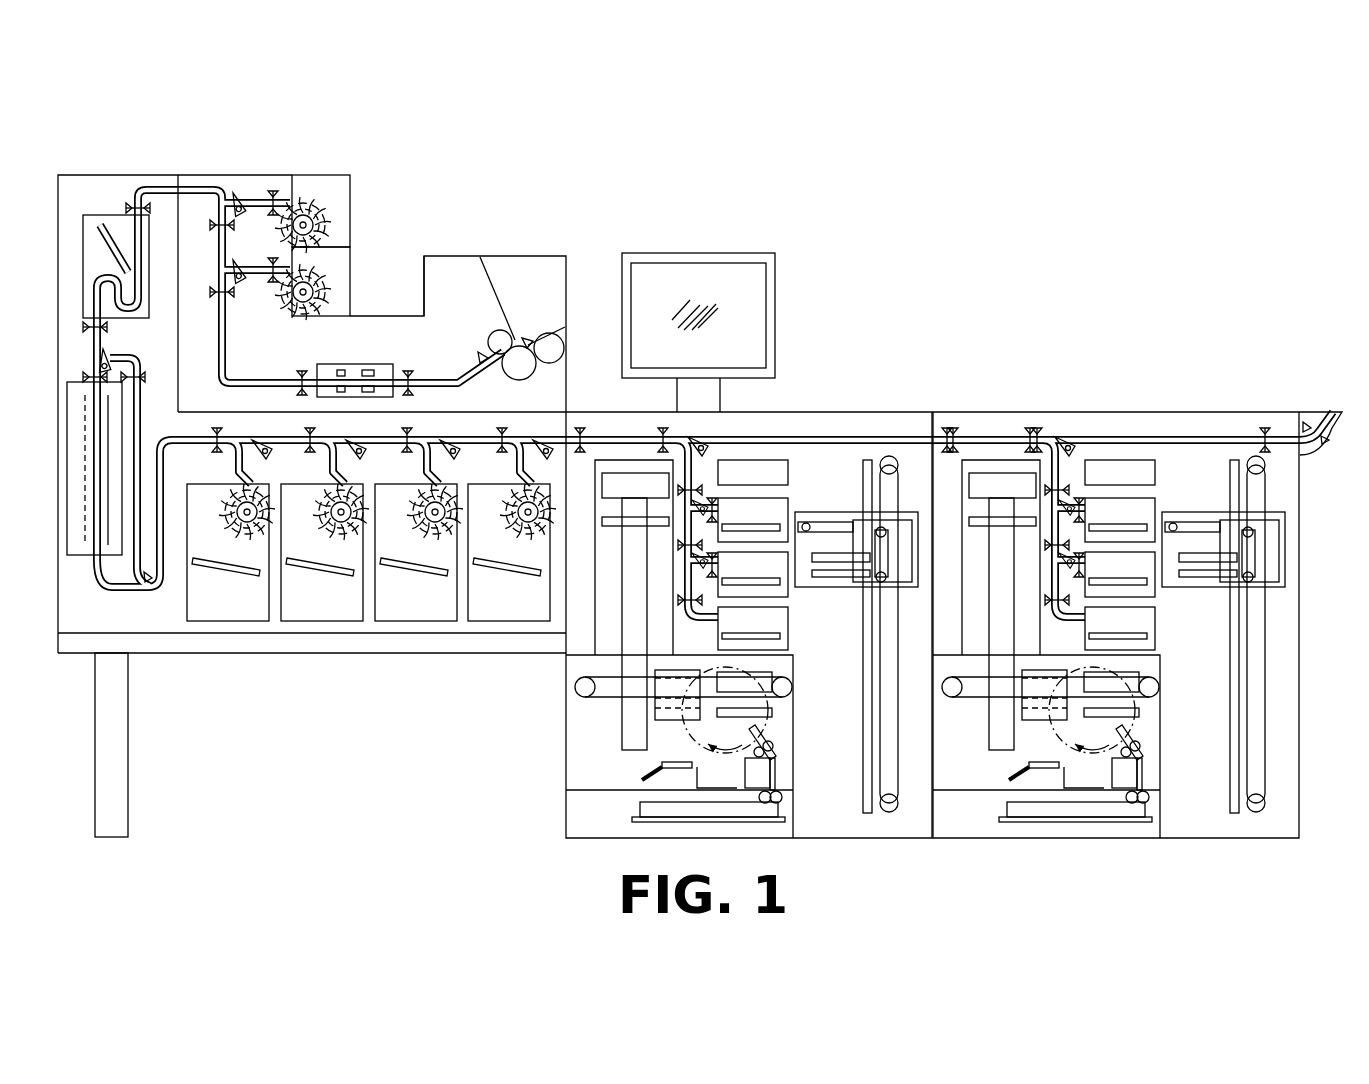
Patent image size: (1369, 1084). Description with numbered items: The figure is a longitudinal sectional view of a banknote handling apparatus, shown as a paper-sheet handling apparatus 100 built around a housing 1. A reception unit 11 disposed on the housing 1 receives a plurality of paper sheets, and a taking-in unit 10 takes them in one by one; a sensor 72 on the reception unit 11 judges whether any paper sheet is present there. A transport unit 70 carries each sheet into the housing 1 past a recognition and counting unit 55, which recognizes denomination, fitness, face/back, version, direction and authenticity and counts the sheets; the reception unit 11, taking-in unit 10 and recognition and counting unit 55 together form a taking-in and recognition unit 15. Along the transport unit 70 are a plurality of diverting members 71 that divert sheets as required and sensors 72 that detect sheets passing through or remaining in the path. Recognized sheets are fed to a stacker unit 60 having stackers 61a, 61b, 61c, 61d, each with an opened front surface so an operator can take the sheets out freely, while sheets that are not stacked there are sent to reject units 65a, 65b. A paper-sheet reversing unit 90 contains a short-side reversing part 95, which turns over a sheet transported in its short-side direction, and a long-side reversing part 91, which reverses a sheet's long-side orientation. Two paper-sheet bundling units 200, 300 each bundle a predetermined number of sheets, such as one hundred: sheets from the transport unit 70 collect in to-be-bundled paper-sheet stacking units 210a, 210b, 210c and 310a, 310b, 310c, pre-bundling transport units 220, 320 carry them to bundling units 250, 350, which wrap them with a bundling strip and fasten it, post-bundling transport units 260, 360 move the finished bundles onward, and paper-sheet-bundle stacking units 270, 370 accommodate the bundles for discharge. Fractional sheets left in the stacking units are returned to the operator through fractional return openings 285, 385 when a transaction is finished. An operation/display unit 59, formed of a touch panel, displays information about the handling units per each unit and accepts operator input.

The housing 1 is at (458, 256).
The taking-in unit 10 is at (520, 336).
The reception unit 11 is at (550, 322).
The taking-in and recognition unit 15 is at (450, 196).
The recognition and counting unit 55 is at (345, 364).
The operation/display unit 59 is at (698, 252).
The stacker unit 60 is at (275, 697).
The stacker 61a is at (228, 612).
The stacker 61b is at (322, 612).
The stacker 61c is at (416, 612).
The stacker 61d is at (509, 612).
The reject unit 65a is at (348, 276).
The reject unit 65b is at (348, 205).
The transport unit 70 is at (162, 190).
The diverting member 71 is at (270, 455).
The sensor 72 is at (305, 430).
The paper-sheet reversing unit 90 is at (118, 168).
The long-side reversing part 91 is at (67, 560).
The short-side reversing part 95 is at (97, 192).
The paper-sheet handling apparatus 100 is at (878, 198).
The paper-sheet bundling unit 200 is at (815, 306).
The to-be-bundled paper-sheet stacking unit 210a is at (762, 510).
The to-be-bundled paper-sheet stacking unit 210b is at (778, 590).
The to-be-bundled paper-sheet stacking unit 210c is at (782, 640).
The pre-bundling transport unit 220 is at (912, 510).
The bundling unit 250 is at (777, 733).
The post-bundling transport unit 260 is at (600, 700).
The paper-sheet-bundle stacking unit 270 is at (591, 528).
The fractional return opening 285 is at (762, 466).
The paper-sheet bundling unit 300 is at (1178, 392).
The to-be-bundled paper-sheet stacking unit 310a is at (1129, 510).
The to-be-bundled paper-sheet stacking unit 310b is at (1145, 590).
The to-be-bundled paper-sheet stacking unit 310c is at (1149, 640).
The pre-bundling transport unit 320 is at (1290, 577).
The bundling unit 350 is at (1144, 733).
The post-bundling transport unit 360 is at (967, 700).
The paper-sheet-bundle stacking unit 370 is at (958, 528).
The fractional return opening 385 is at (1133, 466).